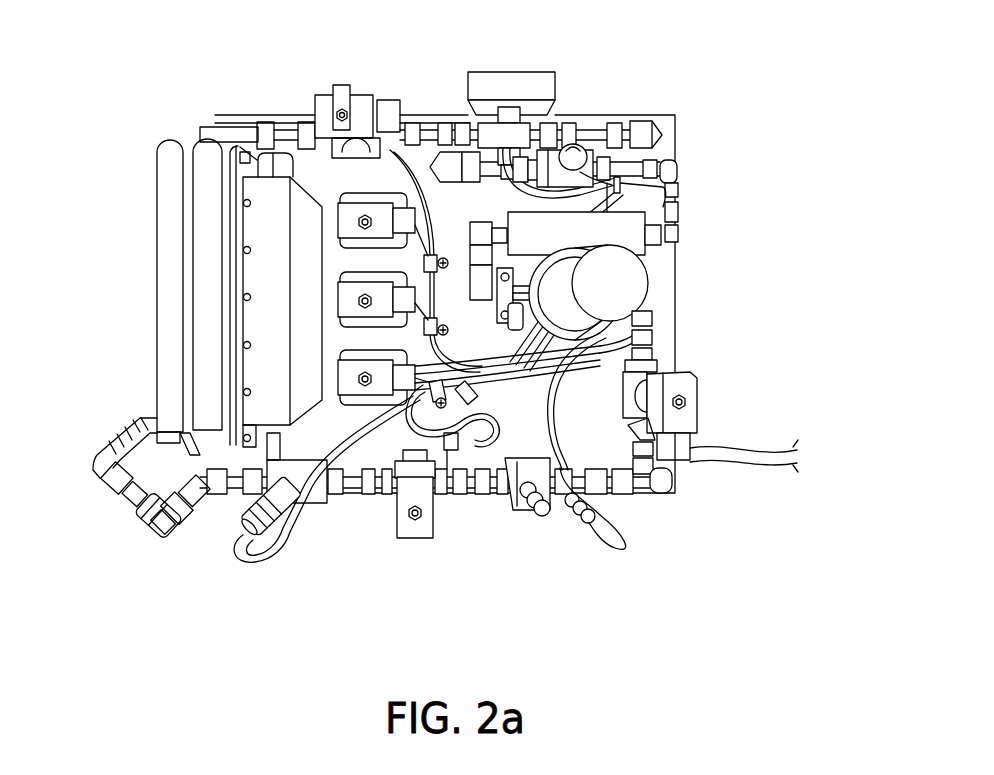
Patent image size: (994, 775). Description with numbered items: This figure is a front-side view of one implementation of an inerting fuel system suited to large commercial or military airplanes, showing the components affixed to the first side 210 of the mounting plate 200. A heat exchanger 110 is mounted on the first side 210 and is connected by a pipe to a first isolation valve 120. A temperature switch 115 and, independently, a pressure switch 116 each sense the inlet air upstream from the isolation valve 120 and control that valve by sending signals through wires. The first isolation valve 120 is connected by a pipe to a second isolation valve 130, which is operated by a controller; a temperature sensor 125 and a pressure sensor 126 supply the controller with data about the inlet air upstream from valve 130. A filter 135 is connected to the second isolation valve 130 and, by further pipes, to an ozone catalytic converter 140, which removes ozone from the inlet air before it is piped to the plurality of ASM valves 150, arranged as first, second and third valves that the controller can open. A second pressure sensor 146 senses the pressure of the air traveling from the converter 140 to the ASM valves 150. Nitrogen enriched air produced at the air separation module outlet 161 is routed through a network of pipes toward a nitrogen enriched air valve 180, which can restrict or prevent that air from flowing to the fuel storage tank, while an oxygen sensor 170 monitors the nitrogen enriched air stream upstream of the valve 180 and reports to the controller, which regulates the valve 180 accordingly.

The heat exchanger 110 is at (168, 203).
The temperature switch 115 is at (268, 520).
The pressure switch 116 is at (463, 495).
The first isolation valve 120 is at (417, 528).
The temperature sensor 125 is at (538, 520).
The pressure sensor 126 is at (583, 527).
The second isolation valve 130 is at (690, 402).
The filter 135 is at (636, 281).
The ozone catalytic converter 140 is at (632, 242).
The second pressure sensor 146 is at (580, 147).
The ASM valves 150 is at (342, 378).
The nitrogen enriched air outlet 161 is at (207, 132).
The oxygen sensor 170 is at (520, 128).
The nitrogen enriched air valve 180 is at (327, 102).
The mounting plate 200 is at (552, 440).
The first side 210 is at (608, 352).